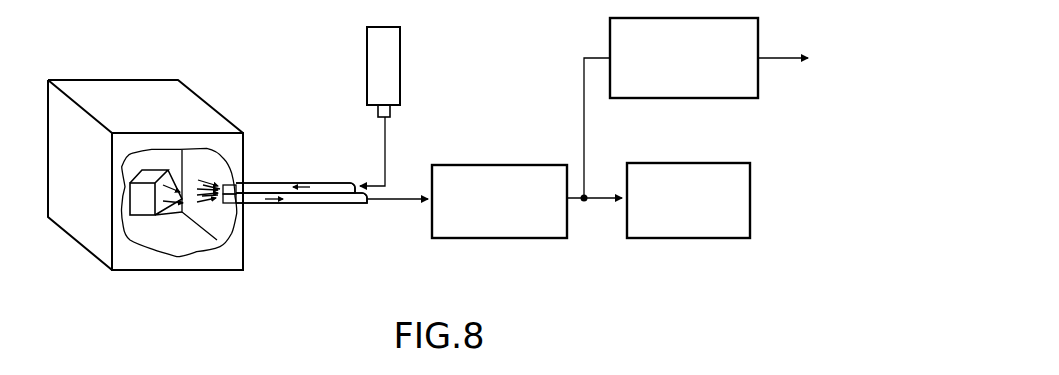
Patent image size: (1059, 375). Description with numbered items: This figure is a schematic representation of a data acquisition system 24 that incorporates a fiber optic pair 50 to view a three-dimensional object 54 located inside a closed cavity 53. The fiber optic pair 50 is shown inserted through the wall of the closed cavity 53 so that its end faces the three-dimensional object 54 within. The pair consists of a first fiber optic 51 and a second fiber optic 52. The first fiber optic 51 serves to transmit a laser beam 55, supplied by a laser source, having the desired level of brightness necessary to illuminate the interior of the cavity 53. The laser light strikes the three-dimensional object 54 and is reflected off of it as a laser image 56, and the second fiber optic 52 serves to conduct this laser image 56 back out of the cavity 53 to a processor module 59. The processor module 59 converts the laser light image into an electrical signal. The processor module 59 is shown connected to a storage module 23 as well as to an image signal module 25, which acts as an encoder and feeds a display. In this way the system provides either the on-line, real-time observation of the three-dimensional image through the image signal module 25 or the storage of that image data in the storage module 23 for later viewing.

The data acquisition system 24 is at (290, 95).
The closed cavity 53 is at (212, 163).
The three-dimensional object 54 is at (143, 190).
The laser image 56 is at (208, 207).
The fiber optic pair 50 is at (270, 213).
The first fiber optic 51 is at (333, 183).
The second fiber optic 52 is at (335, 201).
The laser beam 55 is at (388, 143).
The processor module 59 is at (467, 201).
The storage module 23 is at (668, 238).
The image signal module 25 is at (687, 98).